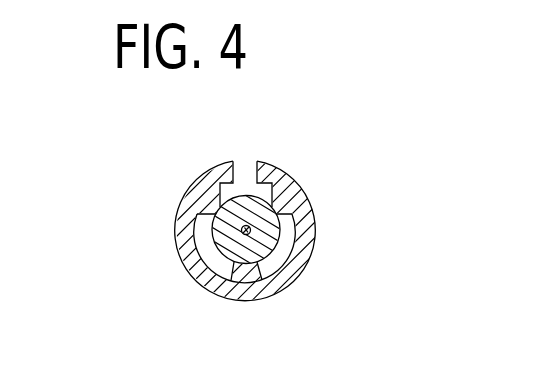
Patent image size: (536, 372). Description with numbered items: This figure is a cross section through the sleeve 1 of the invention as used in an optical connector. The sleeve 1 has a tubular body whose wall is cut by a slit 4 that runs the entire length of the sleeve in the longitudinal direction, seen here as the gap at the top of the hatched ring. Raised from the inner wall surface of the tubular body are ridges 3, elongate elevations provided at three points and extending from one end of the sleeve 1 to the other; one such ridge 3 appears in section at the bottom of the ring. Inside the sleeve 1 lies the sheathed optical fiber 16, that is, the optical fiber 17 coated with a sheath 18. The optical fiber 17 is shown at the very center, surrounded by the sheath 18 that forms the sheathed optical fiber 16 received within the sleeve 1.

The sleeve 1 is at (323, 205).
The ridges 3 is at (262, 264).
The slit 4 is at (246, 167).
The sheathed optical fiber 16 is at (208, 266).
The optical fiber 17 is at (242, 231).
The sheath 18 is at (262, 246).